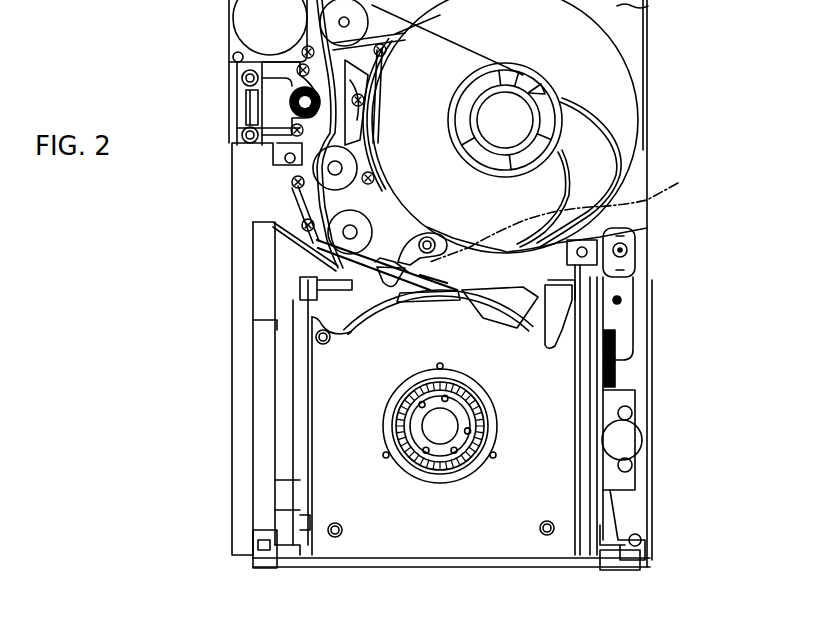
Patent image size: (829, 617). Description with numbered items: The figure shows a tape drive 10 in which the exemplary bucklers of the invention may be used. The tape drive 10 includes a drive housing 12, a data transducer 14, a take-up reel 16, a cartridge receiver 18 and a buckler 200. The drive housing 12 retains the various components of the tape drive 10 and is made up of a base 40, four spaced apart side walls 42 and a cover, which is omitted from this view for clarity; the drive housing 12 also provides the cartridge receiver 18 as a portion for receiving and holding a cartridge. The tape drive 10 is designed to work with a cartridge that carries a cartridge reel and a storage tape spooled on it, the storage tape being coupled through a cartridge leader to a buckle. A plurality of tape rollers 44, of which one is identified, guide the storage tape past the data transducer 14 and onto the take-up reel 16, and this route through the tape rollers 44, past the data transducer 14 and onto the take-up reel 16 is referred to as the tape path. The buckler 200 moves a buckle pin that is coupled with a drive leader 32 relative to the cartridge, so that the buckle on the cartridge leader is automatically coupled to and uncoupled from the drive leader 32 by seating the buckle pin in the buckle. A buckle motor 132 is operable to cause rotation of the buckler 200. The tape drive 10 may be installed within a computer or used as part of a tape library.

The tape drive 10 is at (662, 230).
The drive housing 12 is at (652, 417).
The data transducer 14 is at (262, 110).
The take-up reel 16 is at (610, 64).
The cartridge receiver 18 is at (560, 545).
The drive leader 32 is at (310, 302).
The base 40 is at (655, 6).
The side walls 42 is at (648, 140).
The tape rollers 44 is at (290, 210).
The buckle motor 132 is at (627, 250).
The buckler 200 is at (571, 215).